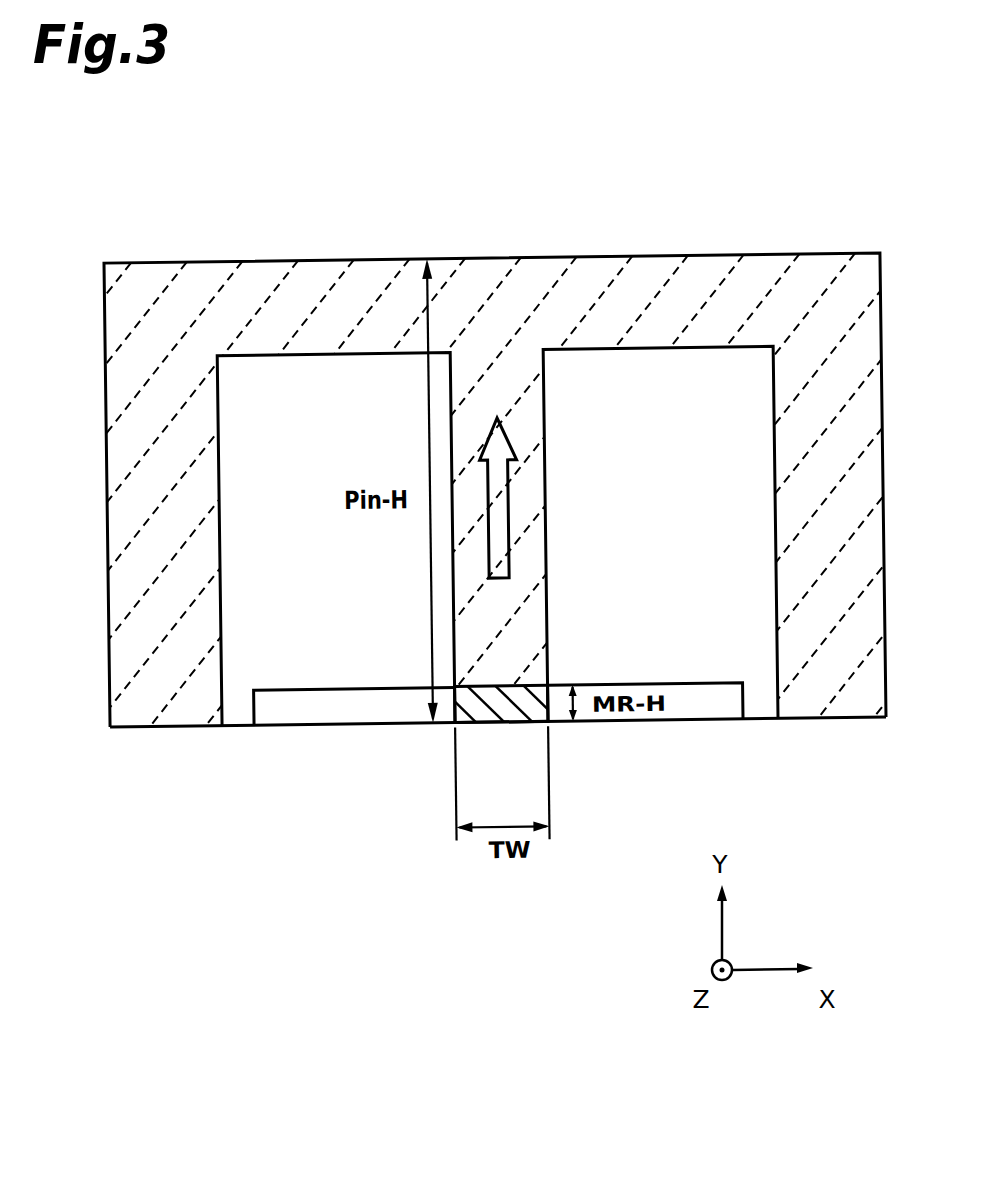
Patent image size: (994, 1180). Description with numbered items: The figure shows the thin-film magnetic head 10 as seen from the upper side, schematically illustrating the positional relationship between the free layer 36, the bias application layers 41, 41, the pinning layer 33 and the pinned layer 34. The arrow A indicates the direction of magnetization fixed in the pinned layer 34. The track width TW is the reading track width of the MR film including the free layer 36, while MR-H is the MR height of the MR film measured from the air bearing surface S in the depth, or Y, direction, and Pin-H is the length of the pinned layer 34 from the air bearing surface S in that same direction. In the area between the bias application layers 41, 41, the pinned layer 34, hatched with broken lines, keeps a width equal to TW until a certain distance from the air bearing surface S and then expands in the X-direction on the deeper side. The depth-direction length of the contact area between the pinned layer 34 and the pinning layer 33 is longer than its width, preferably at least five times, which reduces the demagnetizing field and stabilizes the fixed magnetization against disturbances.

The thin-film magnetic head 10 is at (844, 190).
The pinning layer 33 is at (497, 449).
The pinned layer 34 is at (508, 277).
The free layer 36 is at (495, 725).
The bias application layers 41 is at (322, 715).
The air bearing surface S is at (633, 725).
The arrow A is at (504, 434).